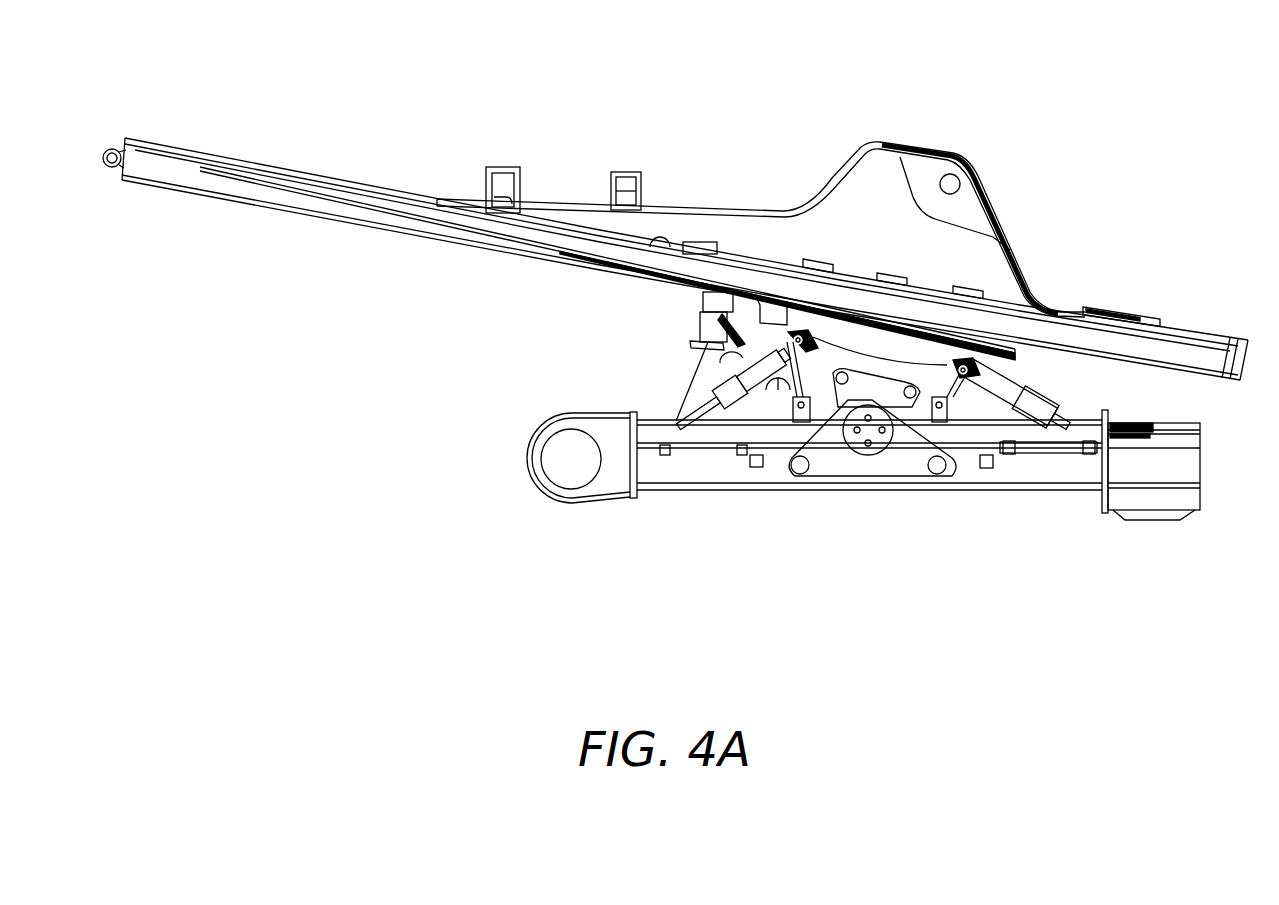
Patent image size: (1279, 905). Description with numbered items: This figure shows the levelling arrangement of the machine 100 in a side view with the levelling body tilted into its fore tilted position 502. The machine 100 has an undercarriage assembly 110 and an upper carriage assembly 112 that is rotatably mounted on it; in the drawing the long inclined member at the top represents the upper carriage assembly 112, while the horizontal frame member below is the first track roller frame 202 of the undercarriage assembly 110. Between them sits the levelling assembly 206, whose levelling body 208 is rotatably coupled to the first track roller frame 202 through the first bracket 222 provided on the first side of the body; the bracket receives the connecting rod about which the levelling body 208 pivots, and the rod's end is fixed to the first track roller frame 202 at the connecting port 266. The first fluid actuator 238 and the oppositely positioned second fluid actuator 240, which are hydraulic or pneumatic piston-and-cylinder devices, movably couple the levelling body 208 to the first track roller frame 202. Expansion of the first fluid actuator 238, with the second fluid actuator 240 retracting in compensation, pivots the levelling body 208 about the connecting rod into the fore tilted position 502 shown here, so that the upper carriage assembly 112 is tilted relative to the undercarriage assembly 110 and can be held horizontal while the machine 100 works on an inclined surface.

The fore tilted position 502 is at (226, 64).
The upper carriage assembly 112 is at (326, 196).
The machine 100 is at (1112, 80).
The levelling body 208 is at (1028, 350).
The first fluid actuator 238 is at (722, 362).
The second fluid actuator 240 is at (1040, 390).
The first bracket 222 is at (957, 393).
The levelling assembly 206 is at (738, 425).
The undercarriage assembly 110 is at (488, 508).
The connecting port 266 is at (907, 465).
The first track roller frame 202 is at (1160, 466).